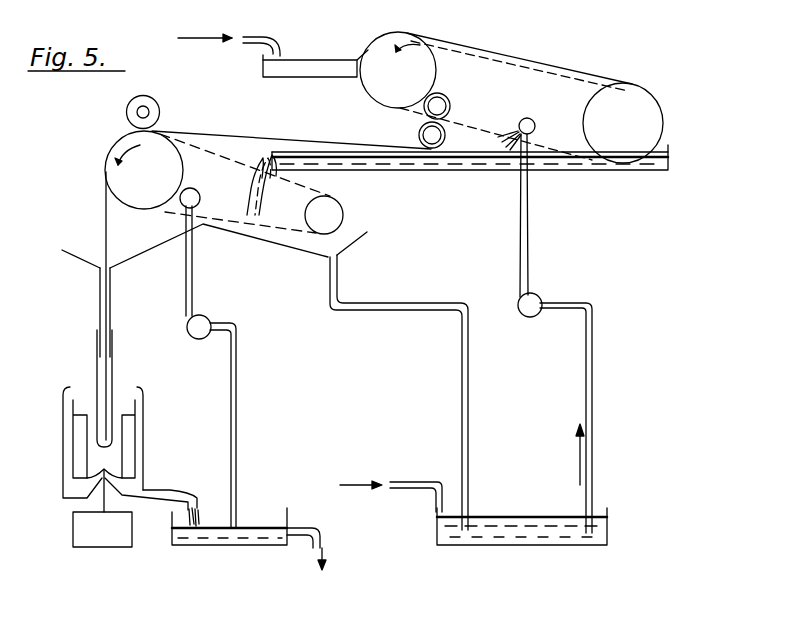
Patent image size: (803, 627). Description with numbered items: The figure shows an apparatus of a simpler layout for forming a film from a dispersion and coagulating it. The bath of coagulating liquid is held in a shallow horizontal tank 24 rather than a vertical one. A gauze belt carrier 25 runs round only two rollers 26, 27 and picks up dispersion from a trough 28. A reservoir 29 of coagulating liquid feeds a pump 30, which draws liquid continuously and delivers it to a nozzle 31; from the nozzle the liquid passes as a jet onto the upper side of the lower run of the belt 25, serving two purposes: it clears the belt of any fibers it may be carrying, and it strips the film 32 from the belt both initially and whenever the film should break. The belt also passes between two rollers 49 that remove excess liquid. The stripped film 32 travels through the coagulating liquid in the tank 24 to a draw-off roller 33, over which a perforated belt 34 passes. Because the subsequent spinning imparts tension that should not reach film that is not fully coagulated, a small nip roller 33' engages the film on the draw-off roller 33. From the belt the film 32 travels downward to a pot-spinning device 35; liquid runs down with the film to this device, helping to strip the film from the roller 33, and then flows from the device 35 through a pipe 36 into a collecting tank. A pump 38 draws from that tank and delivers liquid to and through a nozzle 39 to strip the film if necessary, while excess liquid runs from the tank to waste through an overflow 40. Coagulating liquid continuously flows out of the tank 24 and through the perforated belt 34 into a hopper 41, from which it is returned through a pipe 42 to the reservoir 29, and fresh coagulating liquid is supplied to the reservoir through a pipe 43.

The shallow horizontal tank 24 is at (452, 171).
The gauze belt carrier 25 is at (546, 66).
The roller 26 is at (588, 111).
The roller 27 is at (373, 98).
The trough 28 is at (311, 78).
The reservoir 29 is at (513, 545).
The pump 30 is at (538, 296).
The nozzle 31 is at (519, 121).
The film 32 is at (234, 142).
The draw-off roller 33 is at (144, 285).
The nip roller 33' is at (95, 112).
The perforated belt 34 is at (193, 145).
The pot-spinning device 35 is at (144, 415).
The pipe 36 is at (165, 490).
The pump 38 is at (205, 317).
The nozzle 39 is at (196, 193).
The overflow 40 is at (326, 538).
The hopper 41 is at (309, 252).
The pipe 42 is at (469, 487).
The pipe 43 is at (402, 480).
The rollers 49 is at (447, 98).